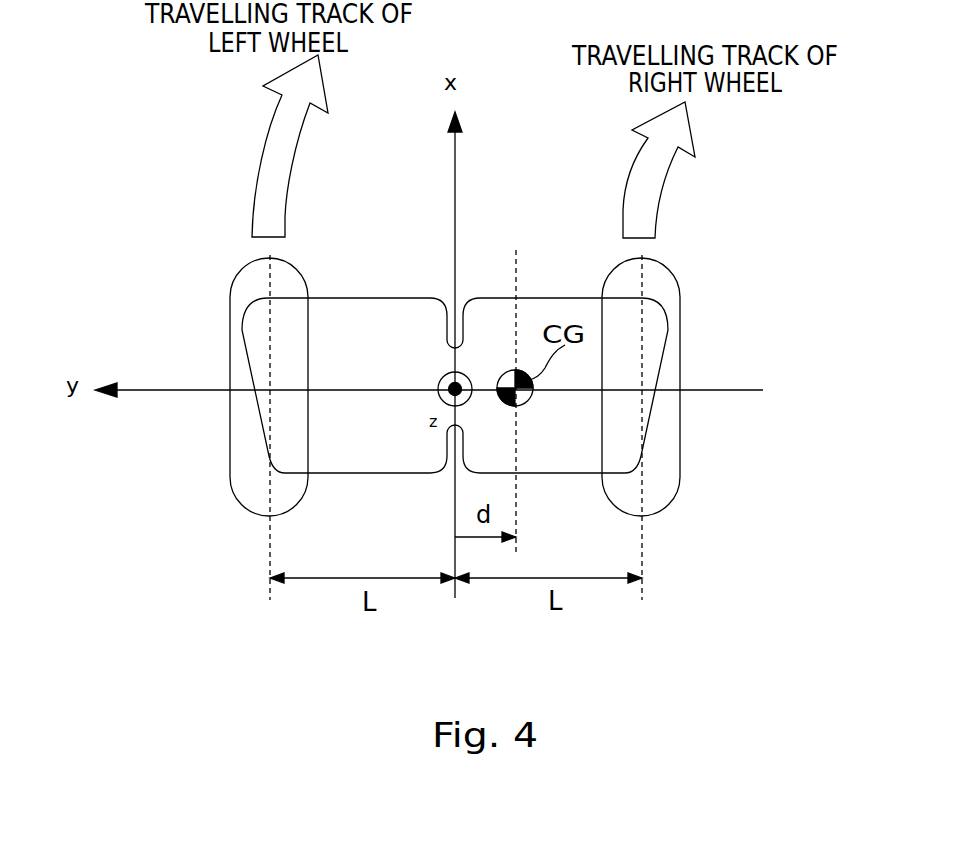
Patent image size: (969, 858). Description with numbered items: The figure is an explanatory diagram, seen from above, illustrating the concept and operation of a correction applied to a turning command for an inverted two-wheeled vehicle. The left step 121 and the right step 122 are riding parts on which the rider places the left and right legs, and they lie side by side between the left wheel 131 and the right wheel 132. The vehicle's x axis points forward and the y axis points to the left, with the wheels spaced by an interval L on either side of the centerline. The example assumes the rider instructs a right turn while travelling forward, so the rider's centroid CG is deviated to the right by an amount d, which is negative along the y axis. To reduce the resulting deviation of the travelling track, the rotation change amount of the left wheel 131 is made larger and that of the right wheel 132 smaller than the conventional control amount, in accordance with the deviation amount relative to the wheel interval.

The left step 121 is at (370, 297).
The right step 122 is at (545, 297).
The left wheel 131 is at (242, 507).
The right wheel 132 is at (677, 498).